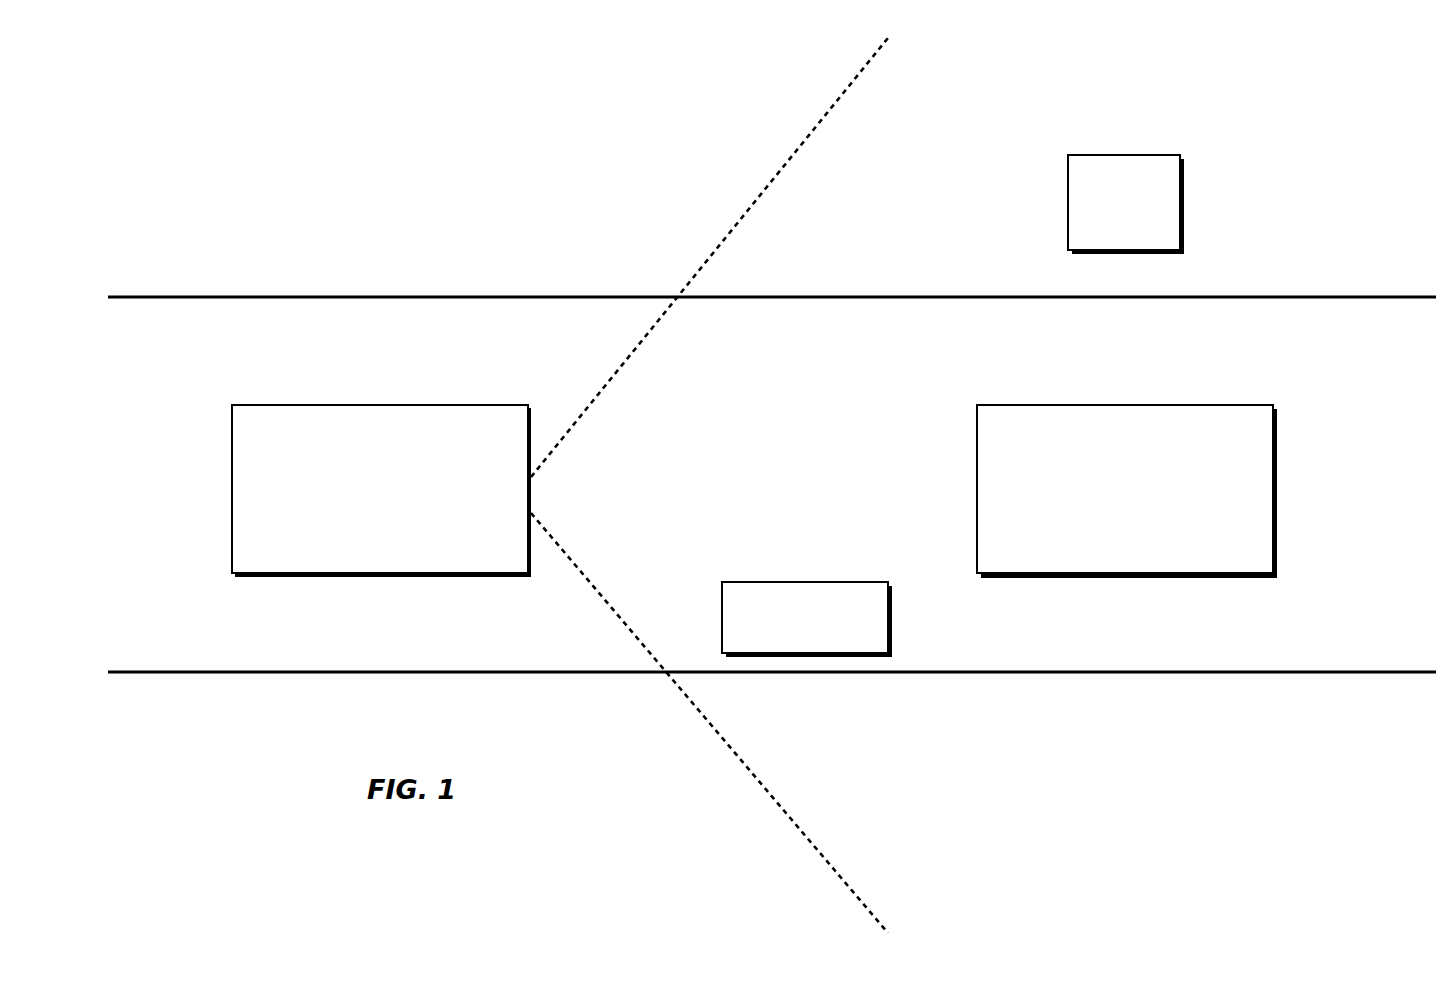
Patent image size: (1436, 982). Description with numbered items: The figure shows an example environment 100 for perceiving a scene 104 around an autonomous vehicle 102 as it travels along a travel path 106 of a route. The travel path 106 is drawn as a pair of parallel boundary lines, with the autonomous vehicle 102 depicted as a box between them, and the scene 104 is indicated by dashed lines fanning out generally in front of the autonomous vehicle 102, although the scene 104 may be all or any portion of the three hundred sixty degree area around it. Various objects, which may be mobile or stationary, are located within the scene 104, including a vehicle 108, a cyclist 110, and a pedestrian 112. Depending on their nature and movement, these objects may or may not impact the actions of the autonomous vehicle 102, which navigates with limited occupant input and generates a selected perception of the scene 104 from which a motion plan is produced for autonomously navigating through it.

The environment 100 is at (553, 250).
The autonomous vehicle 102 is at (381, 491).
The scene 104 is at (760, 787).
The travel path 106 is at (316, 296).
The vehicle 108 is at (1127, 491).
The cyclist 110 is at (807, 619).
The pedestrian 112 is at (1126, 204).